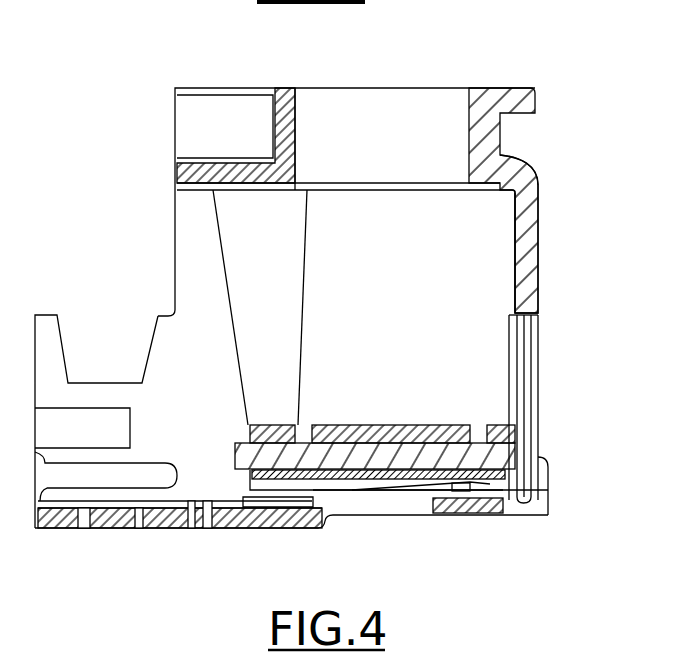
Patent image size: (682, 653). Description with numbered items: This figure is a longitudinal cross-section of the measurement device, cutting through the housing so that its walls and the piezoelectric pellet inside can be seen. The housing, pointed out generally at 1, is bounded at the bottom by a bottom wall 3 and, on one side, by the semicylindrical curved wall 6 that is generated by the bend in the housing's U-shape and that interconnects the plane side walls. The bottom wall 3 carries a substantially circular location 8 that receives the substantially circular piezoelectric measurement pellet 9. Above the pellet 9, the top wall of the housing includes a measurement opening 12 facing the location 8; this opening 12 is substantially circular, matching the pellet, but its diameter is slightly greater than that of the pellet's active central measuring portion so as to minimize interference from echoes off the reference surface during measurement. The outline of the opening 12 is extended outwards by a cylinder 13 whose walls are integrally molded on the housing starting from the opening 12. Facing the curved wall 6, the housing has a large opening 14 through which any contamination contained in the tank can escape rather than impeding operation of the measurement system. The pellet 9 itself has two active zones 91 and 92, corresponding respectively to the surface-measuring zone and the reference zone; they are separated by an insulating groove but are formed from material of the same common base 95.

The housing 1 is at (171, 210).
The bottom wall 3 is at (358, 488).
The semicylindrical curved wall 6 is at (525, 253).
The circular location 8 is at (480, 487).
The piezoelectric measurement pellet 9 is at (368, 428).
The measurement opening 12 is at (433, 185).
The cylinder 13 is at (492, 103).
The large opening 14 is at (186, 367).
The active zone 91 is at (437, 427).
The active zone 92 is at (502, 424).
The base 95 is at (310, 457).